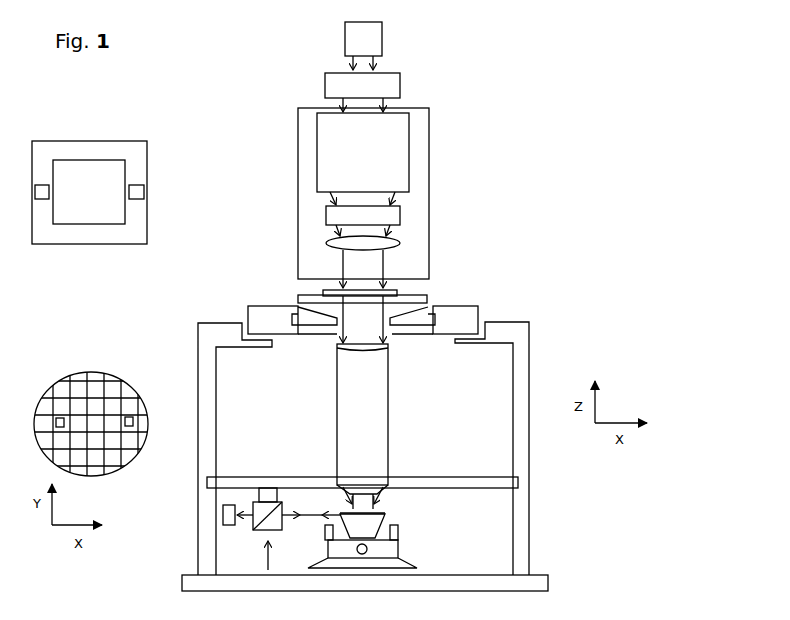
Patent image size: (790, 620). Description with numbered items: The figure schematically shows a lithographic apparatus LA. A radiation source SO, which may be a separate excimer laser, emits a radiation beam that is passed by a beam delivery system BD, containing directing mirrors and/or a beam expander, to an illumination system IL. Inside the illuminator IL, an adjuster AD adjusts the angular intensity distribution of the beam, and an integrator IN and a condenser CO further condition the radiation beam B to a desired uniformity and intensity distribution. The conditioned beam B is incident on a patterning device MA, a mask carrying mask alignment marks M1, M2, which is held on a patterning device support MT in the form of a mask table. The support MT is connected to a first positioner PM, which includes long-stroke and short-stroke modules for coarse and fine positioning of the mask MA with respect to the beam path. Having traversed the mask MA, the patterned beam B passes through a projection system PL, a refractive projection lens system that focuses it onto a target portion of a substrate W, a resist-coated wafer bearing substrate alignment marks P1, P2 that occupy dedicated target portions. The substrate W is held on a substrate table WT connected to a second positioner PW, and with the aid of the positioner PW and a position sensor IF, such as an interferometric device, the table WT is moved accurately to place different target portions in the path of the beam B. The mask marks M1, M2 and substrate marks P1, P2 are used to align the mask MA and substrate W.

The radiation source SO is at (383, 42).
The beam delivery system BD is at (400, 89).
The illumination system IL is at (429, 125).
The adjuster AD is at (410, 157).
The integrator IN is at (400, 213).
The condenser CO is at (398, 242).
The lithographic apparatus LA is at (531, 198).
The radiation beam B is at (363, 287).
The patterning device MA is at (173, 203).
The mask alignment mark M1 is at (137, 185).
The mask alignment mark M2 is at (40, 185).
The patterning device support MT is at (427, 303).
The first positioner PM is at (248, 306).
The projection system PL is at (390, 407).
The substrate W is at (207, 426).
The substrate alignment mark P1 is at (54, 418).
The substrate alignment mark P2 is at (129, 417).
The substrate table WT is at (388, 516).
The second positioner PW is at (407, 552).
The position sensor IF is at (247, 536).